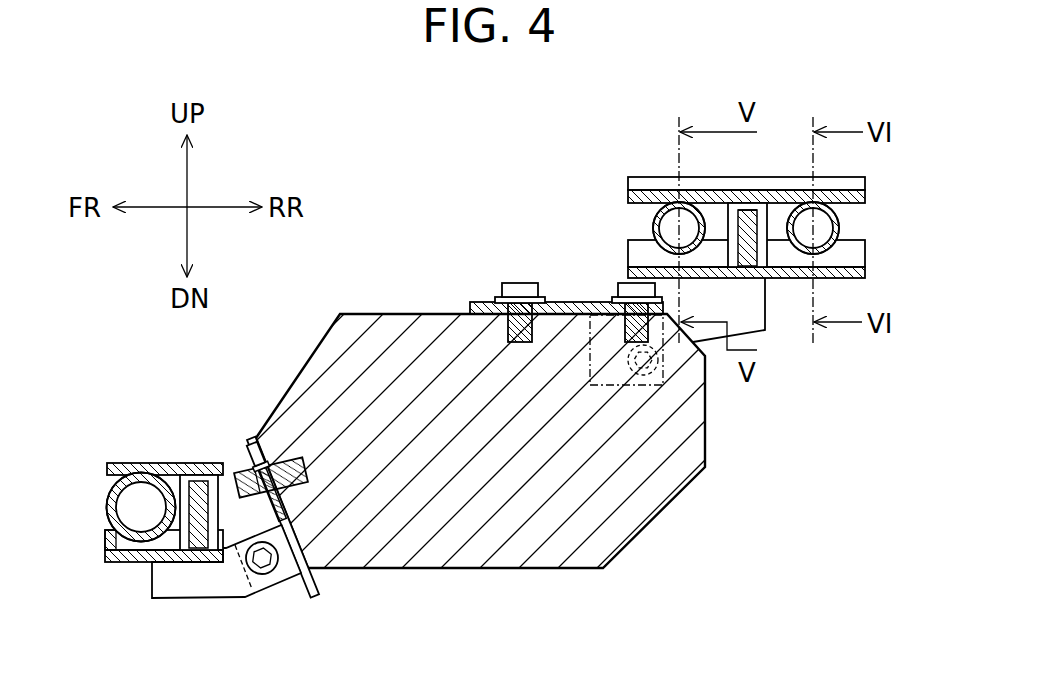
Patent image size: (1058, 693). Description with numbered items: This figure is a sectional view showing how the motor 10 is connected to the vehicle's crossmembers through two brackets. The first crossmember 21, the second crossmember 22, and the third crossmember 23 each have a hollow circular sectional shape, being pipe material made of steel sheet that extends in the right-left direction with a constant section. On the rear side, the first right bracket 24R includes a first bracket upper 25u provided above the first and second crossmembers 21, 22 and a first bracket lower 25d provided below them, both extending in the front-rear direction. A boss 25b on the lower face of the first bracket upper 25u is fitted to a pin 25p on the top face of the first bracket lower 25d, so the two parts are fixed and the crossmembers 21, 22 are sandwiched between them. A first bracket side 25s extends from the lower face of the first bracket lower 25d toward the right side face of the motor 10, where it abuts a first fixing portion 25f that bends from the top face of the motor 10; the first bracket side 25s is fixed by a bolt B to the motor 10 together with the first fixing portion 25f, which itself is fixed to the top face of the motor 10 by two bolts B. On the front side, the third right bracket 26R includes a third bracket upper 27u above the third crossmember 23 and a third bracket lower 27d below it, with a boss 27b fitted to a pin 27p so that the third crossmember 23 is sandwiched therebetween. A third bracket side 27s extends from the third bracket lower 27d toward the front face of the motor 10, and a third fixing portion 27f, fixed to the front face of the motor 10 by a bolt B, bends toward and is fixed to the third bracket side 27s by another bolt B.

The motor 10 is at (627, 517).
The first crossmember 21 is at (839, 228).
The second crossmember 22 is at (656, 222).
The third crossmember 23 is at (106, 507).
The first right bracket 24R is at (771, 223).
The first bracket upper 25u is at (857, 195).
The first bracket lower 25d is at (855, 275).
The pin 25p is at (750, 175).
The boss 25b is at (772, 175).
The first bracket side 25s is at (752, 308).
The first fixing portion 25f is at (490, 303).
The third right bracket 26R is at (194, 524).
The third bracket upper 27u is at (108, 467).
The third bracket lower 27d is at (107, 558).
The pin 27p is at (193, 474).
The boss 27b is at (216, 472).
The third bracket side 27s is at (213, 582).
The third fixing portion 27f is at (311, 598).
The bolt B is at (518, 283).